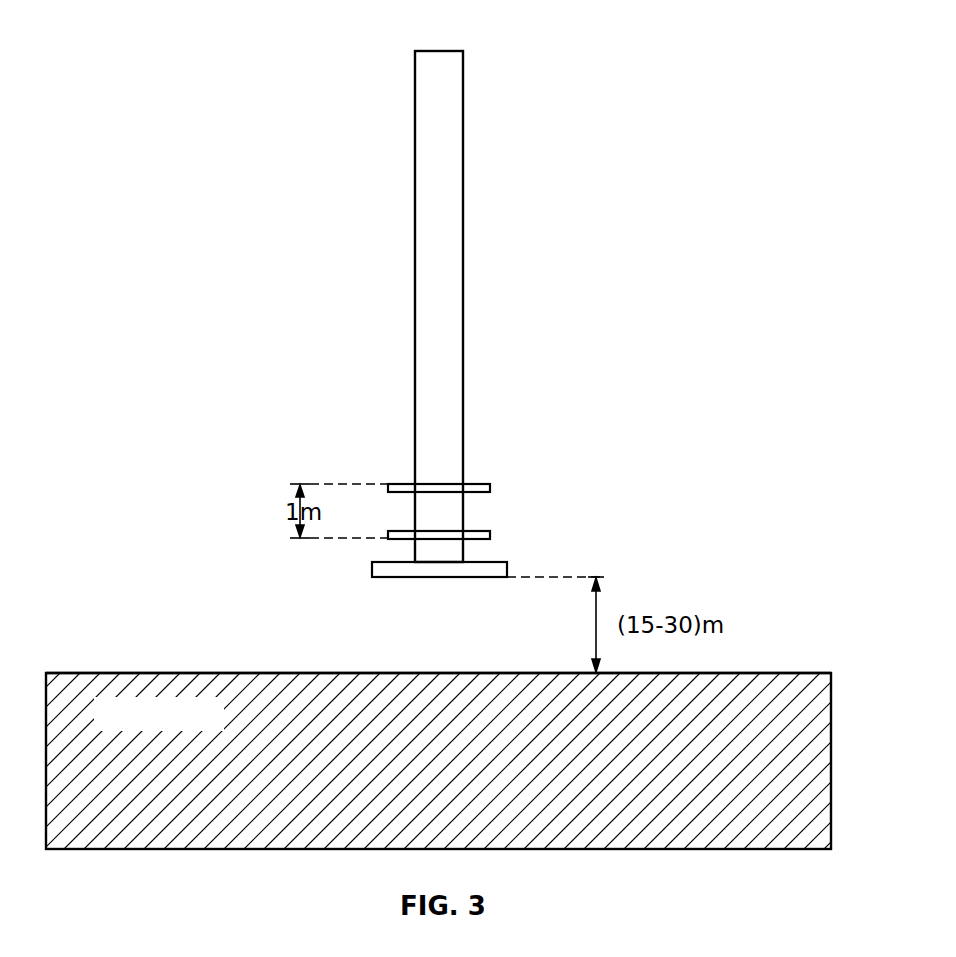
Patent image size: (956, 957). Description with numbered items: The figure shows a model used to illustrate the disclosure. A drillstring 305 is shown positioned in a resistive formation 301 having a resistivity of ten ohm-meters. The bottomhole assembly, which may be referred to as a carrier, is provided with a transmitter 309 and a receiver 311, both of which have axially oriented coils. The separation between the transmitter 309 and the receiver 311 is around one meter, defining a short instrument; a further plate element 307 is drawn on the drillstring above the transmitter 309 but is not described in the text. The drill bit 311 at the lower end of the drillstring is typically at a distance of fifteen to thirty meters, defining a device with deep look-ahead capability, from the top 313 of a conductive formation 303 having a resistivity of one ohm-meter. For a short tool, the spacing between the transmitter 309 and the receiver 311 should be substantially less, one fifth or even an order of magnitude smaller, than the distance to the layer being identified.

The resistive formation 301 is at (202, 80).
The conductive formation 303 is at (142, 724).
The drillstring 305 is at (415, 238).
The upper plate electrode 307 is at (388, 484).
The transmitter 309 is at (388, 531).
The receiver 311 is at (372, 568).
The top of conductive formation 313 is at (110, 672).